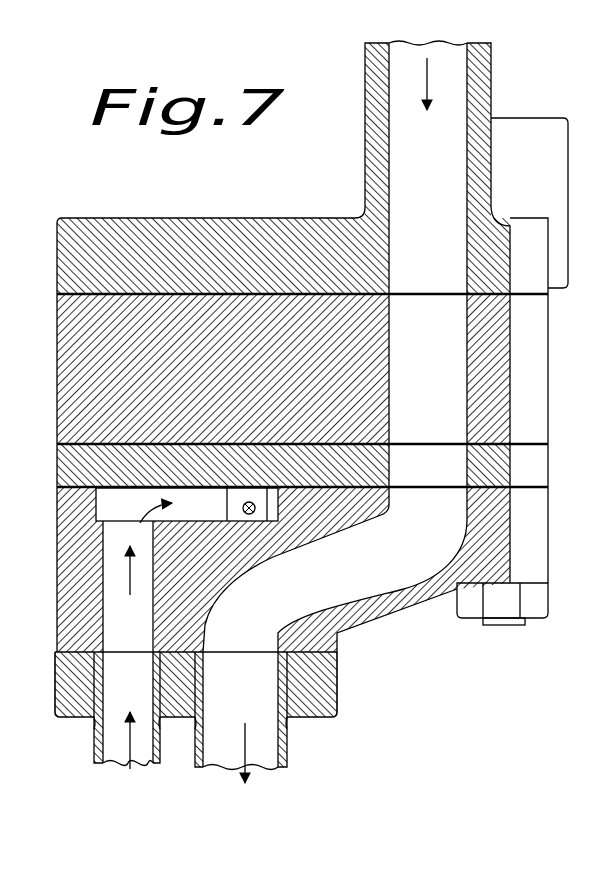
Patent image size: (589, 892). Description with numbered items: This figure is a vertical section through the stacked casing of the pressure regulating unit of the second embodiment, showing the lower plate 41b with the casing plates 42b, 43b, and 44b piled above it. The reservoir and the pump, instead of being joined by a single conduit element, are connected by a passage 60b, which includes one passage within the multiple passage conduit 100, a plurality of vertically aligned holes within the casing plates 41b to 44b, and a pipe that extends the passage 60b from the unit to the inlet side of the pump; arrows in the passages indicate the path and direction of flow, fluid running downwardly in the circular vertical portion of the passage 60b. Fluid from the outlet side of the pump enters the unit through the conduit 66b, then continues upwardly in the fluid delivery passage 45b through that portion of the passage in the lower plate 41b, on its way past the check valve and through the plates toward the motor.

The casing plate 44b is at (68, 246).
The casing plate 43b is at (68, 355).
The casing plate 42b is at (65, 468).
The lower plate 41b is at (67, 585).
The fluid delivery passage 45b is at (143, 567).
The passage 60b is at (443, 58).
The conduit 66b is at (100, 748).
The multiple passage conduit 100 is at (485, 87).